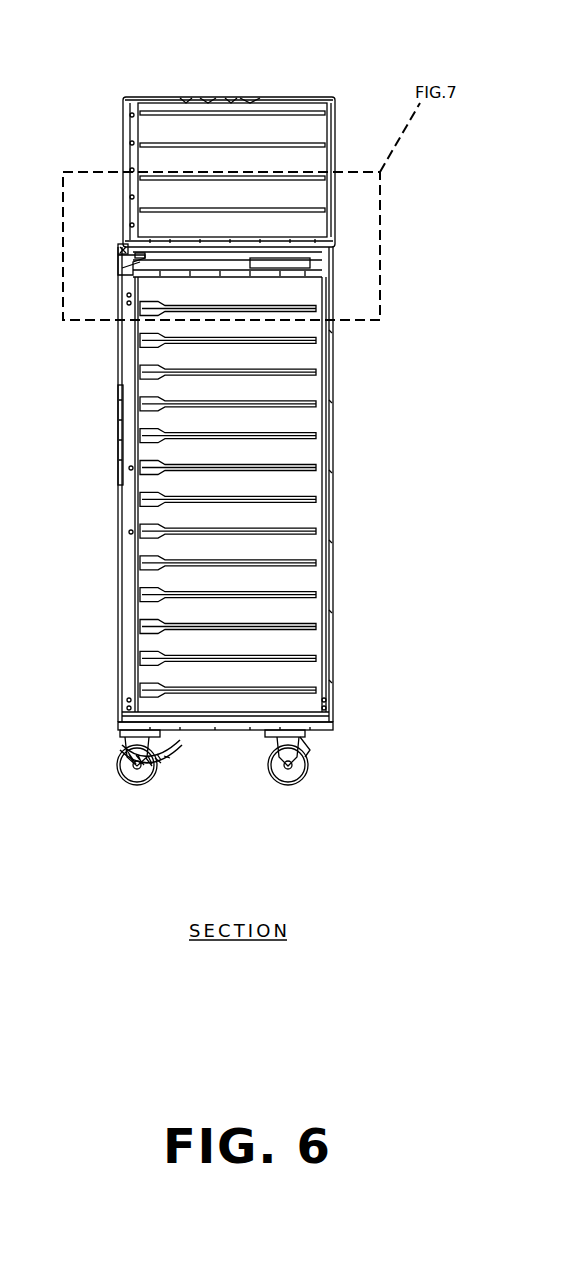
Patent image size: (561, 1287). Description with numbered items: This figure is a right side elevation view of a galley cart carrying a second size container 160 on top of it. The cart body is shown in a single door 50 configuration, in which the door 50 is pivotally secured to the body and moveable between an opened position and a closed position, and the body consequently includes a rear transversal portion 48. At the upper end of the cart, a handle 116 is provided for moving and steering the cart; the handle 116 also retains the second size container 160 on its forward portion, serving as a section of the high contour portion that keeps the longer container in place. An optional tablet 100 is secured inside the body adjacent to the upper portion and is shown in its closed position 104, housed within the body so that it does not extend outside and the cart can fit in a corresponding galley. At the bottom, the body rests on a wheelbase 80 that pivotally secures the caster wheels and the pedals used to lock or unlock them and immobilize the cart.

The second size container 160 is at (296, 112).
The handle 116 is at (119, 247).
The closed position 104 is at (106, 246).
The tablet 100 is at (148, 262).
The door 50 is at (118, 522).
The rear transversal portion 48 is at (330, 641).
The wheelbase 80 is at (152, 802).